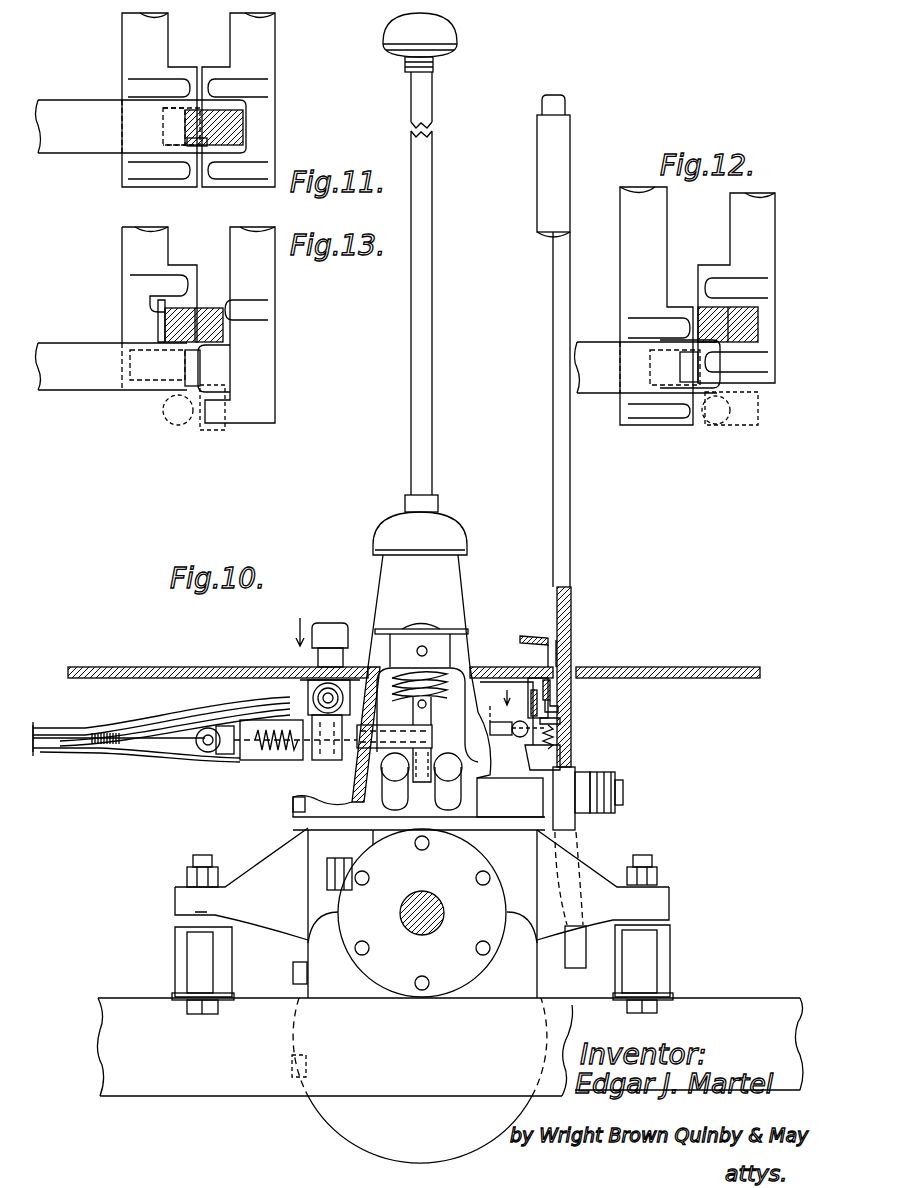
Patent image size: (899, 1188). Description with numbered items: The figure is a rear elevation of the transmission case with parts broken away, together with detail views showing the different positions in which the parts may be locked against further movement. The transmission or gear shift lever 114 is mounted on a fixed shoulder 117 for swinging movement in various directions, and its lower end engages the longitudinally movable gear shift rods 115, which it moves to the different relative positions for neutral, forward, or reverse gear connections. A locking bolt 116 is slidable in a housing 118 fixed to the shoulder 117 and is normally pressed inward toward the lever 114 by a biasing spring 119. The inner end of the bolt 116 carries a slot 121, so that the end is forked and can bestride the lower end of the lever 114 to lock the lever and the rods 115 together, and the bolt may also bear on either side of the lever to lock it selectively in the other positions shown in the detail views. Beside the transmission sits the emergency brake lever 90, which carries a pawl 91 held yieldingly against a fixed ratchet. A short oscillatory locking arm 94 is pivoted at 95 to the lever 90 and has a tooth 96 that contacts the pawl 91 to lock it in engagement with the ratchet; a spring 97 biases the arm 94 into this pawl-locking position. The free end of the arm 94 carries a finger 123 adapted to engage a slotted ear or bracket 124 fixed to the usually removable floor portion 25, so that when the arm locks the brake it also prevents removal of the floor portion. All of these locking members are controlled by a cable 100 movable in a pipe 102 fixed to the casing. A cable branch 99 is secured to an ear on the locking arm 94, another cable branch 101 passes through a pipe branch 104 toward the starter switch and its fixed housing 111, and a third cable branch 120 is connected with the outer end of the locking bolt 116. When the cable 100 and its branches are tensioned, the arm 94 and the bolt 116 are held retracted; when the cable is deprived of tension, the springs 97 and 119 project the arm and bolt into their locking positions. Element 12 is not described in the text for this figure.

In FIG. 10, the vehicle frame post 12 is at (403, 689).
In FIG. 10, the floor portion 25 is at (636, 667).
In FIG. 10, the emergency brake lever 90 is at (553, 462).
In FIG. 10, the pawl 91 is at (558, 713).
In FIG. 10, the locking arm 94 is at (533, 758).
In FIG. 10, the pivot 95 is at (576, 762).
In FIG. 10, the tooth 96 is at (562, 722).
In FIG. 10, the spring 97 is at (554, 744).
In FIG. 10, the cable branch 99 is at (502, 736).
In FIG. 10, the cable 100 is at (72, 748).
In FIG. 10, the cable branch 101 is at (186, 722).
In FIG. 10, the pipe 102 is at (45, 727).
In FIG. 10, the pipe branch 104 is at (141, 724).
In FIG. 10, the housing 111 is at (292, 700).
In FIG. 10, the gear shift lever 114 is at (411, 410).
In FIG. 11, the gear shift lever 114 is at (243, 140).
In FIG. 13, the gear shift lever 114 is at (165, 322).
In FIG. 12, the gear shift lever 114 is at (760, 325).
In FIG. 10, the gear shift rods 115 is at (394, 810).
In FIG. 11, the gear shift rods 115 is at (135, 52).
In FIG. 13, the gear shift rods 115 is at (125, 247).
In FIG. 12, the gear shift rods 115 is at (650, 237).
In FIG. 10, the locking bolt 116 is at (378, 735).
In FIG. 11, the locking bolt 116 is at (72, 145).
In FIG. 13, the locking bolt 116 is at (72, 385).
In FIG. 12, the locking bolt 116 is at (602, 388).
In FIG. 10, the shoulder 117 is at (466, 652).
In FIG. 10, the housing 118 is at (254, 761).
In FIG. 10, the spring 119 is at (280, 761).
In FIG. 10, the cable branch 120 is at (153, 757).
In FIG. 11, the slot 121 is at (190, 150).
In FIG. 13, the slot 121 is at (186, 378).
In FIG. 12, the slot 121 is at (690, 375).
In FIG. 10, the finger 123 is at (540, 700).
In FIG. 10, the bracket 124 is at (548, 697).